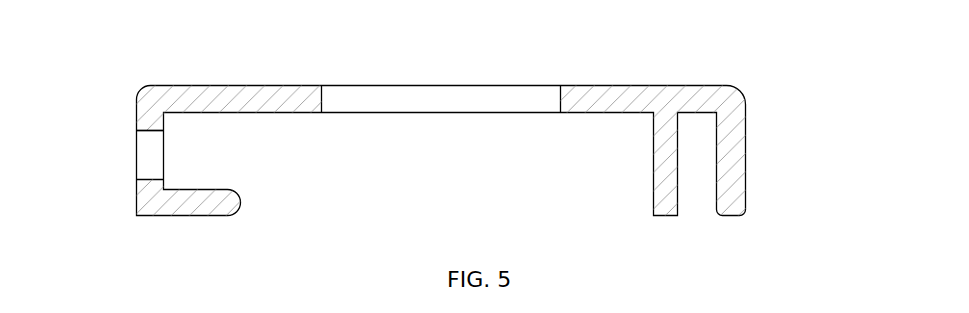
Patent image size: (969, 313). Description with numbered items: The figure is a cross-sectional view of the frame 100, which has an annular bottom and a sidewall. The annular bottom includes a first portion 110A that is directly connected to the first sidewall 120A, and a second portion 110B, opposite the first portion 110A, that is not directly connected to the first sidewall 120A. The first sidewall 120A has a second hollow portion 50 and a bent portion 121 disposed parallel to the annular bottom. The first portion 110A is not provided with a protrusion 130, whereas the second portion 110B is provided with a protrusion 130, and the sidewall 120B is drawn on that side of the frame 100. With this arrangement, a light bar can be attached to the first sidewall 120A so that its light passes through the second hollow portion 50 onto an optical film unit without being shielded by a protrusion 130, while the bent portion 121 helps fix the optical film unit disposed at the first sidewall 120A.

The frame 100 is at (847, 70).
The first portion 110A is at (210, 93).
The second portion 110B is at (683, 90).
The first sidewall 120A is at (150, 125).
The second side wall 120B is at (735, 150).
The bent portion 121 is at (210, 207).
The protrusion 130 is at (658, 153).
The second hollow portion 50 is at (157, 158).